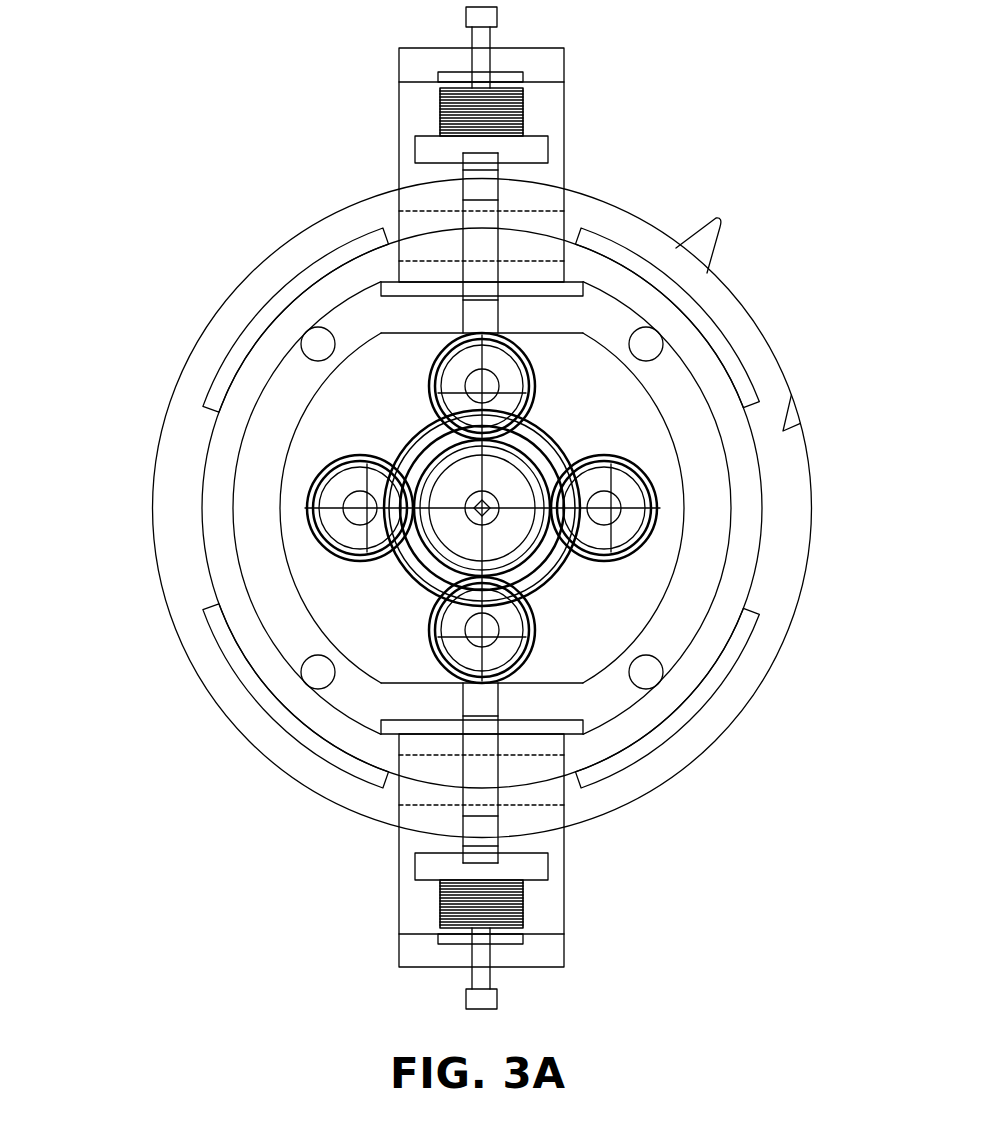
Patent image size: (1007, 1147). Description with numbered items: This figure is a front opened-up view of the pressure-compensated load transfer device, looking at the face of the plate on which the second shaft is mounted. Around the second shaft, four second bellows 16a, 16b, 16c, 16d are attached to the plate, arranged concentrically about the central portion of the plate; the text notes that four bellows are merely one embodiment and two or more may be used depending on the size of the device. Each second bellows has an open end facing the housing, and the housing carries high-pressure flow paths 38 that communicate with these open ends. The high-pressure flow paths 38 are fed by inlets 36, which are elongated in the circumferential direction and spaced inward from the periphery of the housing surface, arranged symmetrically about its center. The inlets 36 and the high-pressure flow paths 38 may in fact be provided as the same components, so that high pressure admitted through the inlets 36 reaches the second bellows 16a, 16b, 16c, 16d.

The second bellows 16a is at (440, 650).
The second bellows 16b is at (655, 519).
The second bellows 16c is at (520, 352).
The second bellows 16d is at (317, 528).
The inlet 36 is at (710, 695).
The high-pressure flow path 38 is at (643, 480).